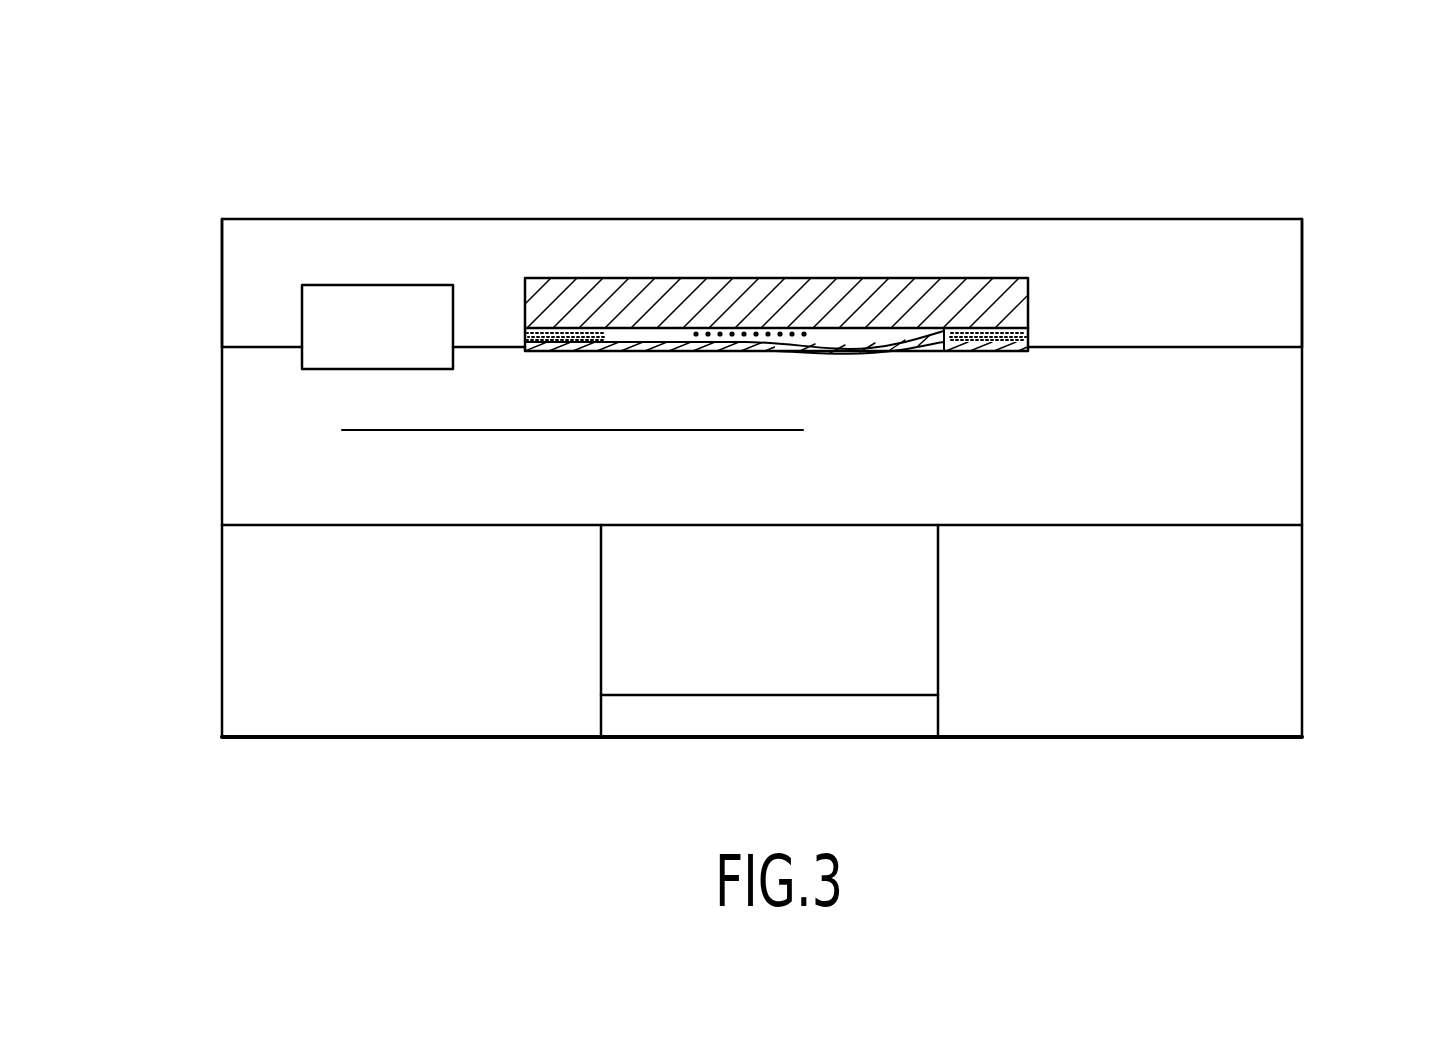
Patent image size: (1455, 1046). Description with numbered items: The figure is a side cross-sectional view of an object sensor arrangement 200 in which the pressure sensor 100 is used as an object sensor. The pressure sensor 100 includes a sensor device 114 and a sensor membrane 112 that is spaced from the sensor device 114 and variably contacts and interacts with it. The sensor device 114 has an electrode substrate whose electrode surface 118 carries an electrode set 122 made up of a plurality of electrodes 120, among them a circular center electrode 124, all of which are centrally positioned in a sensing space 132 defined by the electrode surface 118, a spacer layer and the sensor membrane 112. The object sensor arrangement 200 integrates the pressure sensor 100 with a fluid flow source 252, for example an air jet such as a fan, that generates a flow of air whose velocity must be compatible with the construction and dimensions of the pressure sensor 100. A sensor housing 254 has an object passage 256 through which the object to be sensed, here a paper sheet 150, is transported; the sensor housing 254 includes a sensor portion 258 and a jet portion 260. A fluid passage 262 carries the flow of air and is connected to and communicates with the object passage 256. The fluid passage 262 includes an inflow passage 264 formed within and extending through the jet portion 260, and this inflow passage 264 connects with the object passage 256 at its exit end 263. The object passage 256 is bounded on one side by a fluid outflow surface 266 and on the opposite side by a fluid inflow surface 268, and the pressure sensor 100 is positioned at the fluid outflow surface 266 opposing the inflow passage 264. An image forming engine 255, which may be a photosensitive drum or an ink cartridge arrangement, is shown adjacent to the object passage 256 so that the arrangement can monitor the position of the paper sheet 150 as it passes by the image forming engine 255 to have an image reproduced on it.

The object sensor arrangement 200 is at (1152, 100).
The pressure sensor 100 is at (762, 276).
The sensor membrane 112 is at (605, 352).
The sensor device 114 is at (525, 297).
The electrode surface 118 is at (658, 352).
The electrodes 120 is at (735, 352).
The electrode set 122 is at (720, 352).
The center electrode 124 is at (788, 282).
The sensing space 132 is at (945, 285).
The paper sheet 150 is at (347, 430).
The fluid flow source 252 is at (625, 721).
The sensor housing 254 is at (222, 281).
The image forming engine 255 is at (333, 285).
The object passage 256 is at (272, 453).
The sensor portion 258 is at (1302, 301).
The jet portion 260 is at (1302, 600).
The fluid passage 262 is at (601, 662).
The exit end 263 is at (895, 526).
The inflow passage 264 is at (620, 626).
The fluid outflow surface 266 is at (1267, 347).
The fluid inflow surface 268 is at (1252, 525).